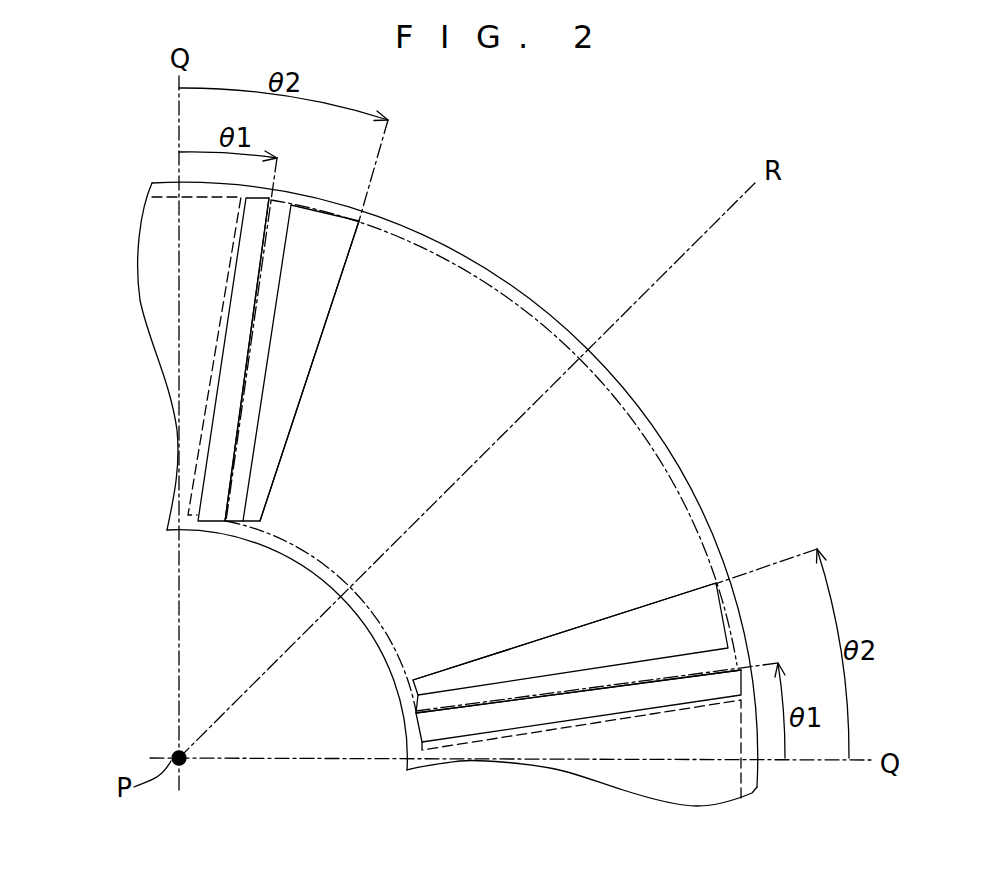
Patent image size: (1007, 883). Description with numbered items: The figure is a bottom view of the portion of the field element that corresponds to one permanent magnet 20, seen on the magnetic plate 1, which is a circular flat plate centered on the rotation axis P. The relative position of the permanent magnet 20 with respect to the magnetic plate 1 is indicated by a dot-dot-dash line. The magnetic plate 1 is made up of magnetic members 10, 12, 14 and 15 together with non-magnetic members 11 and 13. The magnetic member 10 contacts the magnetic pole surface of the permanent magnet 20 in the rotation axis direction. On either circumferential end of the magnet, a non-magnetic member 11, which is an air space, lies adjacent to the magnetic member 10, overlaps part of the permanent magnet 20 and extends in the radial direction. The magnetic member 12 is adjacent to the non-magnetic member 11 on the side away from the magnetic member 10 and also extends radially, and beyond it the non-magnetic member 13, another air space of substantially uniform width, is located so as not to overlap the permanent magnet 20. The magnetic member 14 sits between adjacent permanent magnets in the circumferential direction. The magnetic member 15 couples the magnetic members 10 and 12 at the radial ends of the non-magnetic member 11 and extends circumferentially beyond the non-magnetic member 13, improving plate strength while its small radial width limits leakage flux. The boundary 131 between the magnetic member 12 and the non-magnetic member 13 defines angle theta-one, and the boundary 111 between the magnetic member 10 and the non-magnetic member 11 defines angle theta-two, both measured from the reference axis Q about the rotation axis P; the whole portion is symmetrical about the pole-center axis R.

The magnetic plate 1 is at (482, 266).
The magnetic member 10 is at (505, 311).
The permanent magnet 20 is at (600, 437).
The non-magnetic member 11 is at (331, 262).
The boundary 111 is at (326, 325).
The non-magnetic member 13 is at (209, 522).
The boundary 131 is at (248, 367).
The magnetic member 12 is at (234, 522).
The magnetic member 14 is at (158, 301).
The magnetic member 15 is at (321, 210).